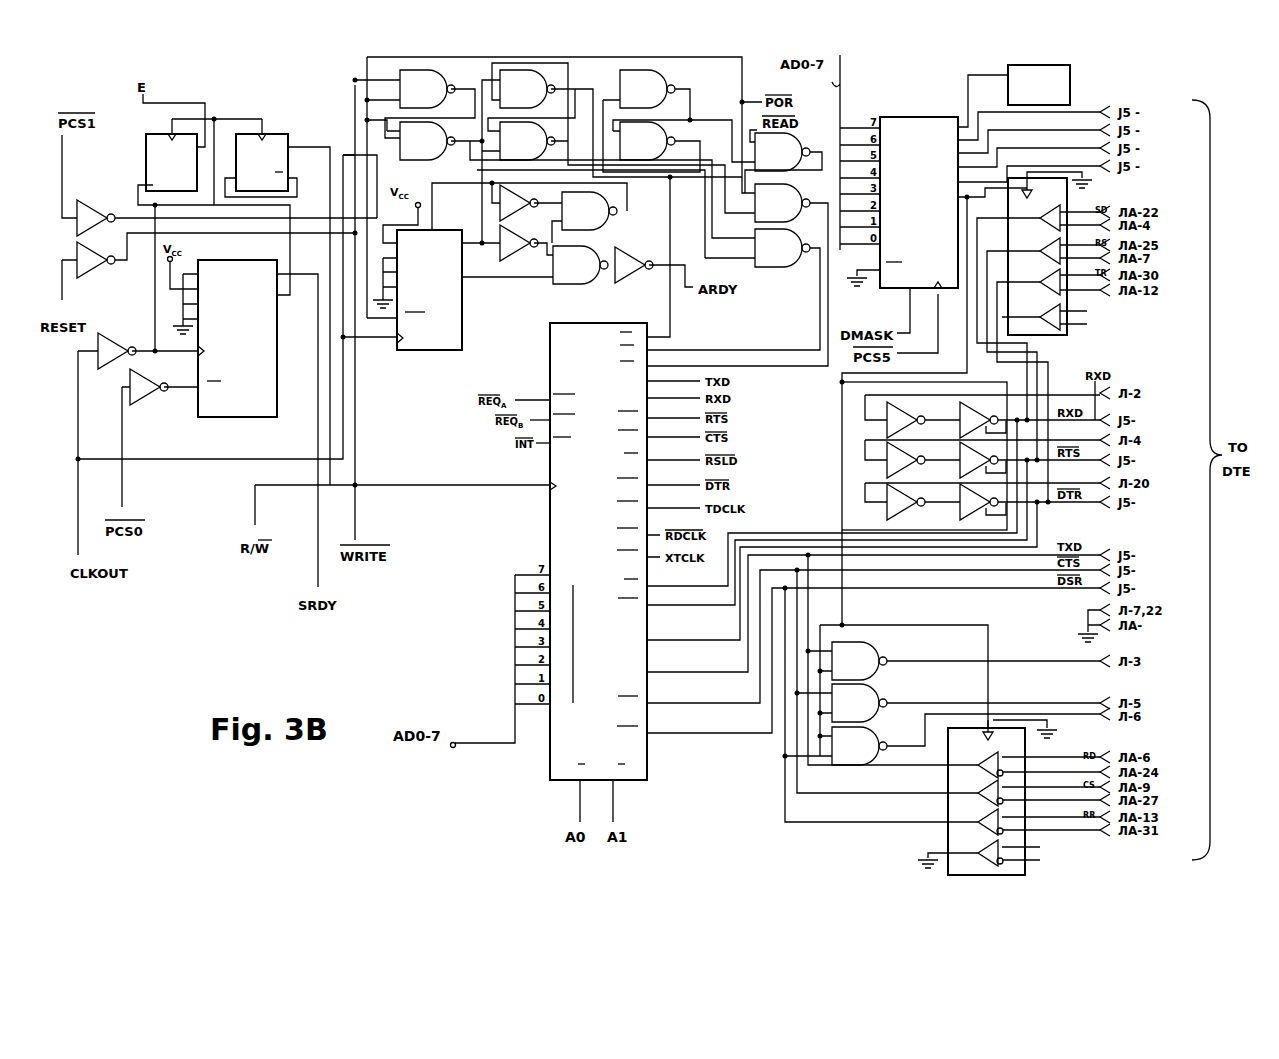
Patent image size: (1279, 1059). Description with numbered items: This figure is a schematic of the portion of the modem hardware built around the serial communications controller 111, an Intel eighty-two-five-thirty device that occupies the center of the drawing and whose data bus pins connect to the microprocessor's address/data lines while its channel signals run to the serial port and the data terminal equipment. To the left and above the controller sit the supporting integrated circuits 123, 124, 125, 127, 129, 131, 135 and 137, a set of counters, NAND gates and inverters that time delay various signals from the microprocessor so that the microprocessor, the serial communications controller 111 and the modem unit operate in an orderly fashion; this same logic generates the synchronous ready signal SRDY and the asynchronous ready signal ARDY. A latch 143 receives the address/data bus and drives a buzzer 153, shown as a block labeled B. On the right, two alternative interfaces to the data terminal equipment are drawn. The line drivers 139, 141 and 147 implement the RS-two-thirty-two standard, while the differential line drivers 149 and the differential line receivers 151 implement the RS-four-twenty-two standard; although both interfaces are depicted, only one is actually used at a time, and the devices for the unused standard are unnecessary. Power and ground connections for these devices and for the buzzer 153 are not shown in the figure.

The serial communications controller 111 is at (550, 760).
The integrated circuit 123 is at (240, 418).
The integrated circuit 124 is at (412, 352).
The integrated circuit 125 is at (224, 114).
The integrated circuit 127 is at (700, 95).
The integrated circuit 129 is at (97, 278).
The integrated circuit 131 is at (112, 372).
The integrated circuit 135 is at (362, 72).
The integrated circuit 137 is at (788, 282).
The line driver 139 is at (985, 511).
The line driver 141 is at (772, 760).
The integrated circuit 143 is at (878, 282).
The line driver 147 is at (830, 486).
The differential line drivers 149 is at (1025, 868).
The differential line receivers 151 is at (1067, 330).
The buzzer 153 is at (1070, 90).